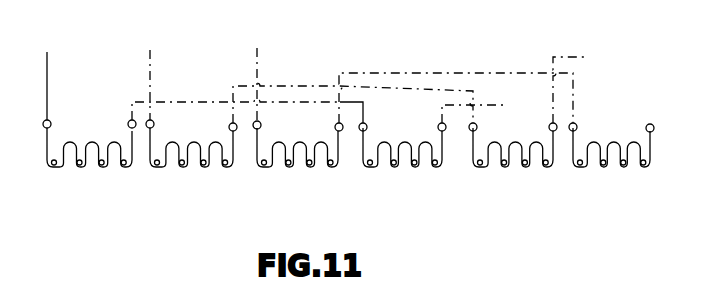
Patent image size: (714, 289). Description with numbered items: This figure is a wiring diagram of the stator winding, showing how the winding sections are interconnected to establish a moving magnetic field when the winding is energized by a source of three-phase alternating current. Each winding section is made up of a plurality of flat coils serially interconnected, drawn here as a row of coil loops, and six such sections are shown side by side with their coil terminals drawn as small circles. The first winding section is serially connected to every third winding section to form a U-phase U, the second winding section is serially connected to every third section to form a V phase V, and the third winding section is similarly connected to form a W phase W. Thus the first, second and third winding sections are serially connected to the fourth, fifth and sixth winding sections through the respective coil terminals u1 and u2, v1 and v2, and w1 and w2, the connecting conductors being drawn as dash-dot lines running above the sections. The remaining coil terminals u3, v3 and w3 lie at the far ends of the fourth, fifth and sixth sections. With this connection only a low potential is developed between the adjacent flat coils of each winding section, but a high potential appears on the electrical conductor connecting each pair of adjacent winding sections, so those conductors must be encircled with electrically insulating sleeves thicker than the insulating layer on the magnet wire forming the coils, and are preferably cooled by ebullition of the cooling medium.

The U-phase U is at (45, 79).
The V phase V is at (149, 78).
The W phase W is at (252, 79).
The coil terminal u1 is at (217, 113).
The coil terminal v1 is at (338, 107).
The coil terminal w1 is at (435, 103).
The coil terminal u2 is at (365, 118).
The coil terminal u3 is at (457, 119).
The coil terminal v2 is at (483, 123).
The coil terminal v3 is at (553, 96).
The coil terminal w2 is at (583, 121).
The coil terminal w3 is at (661, 122).